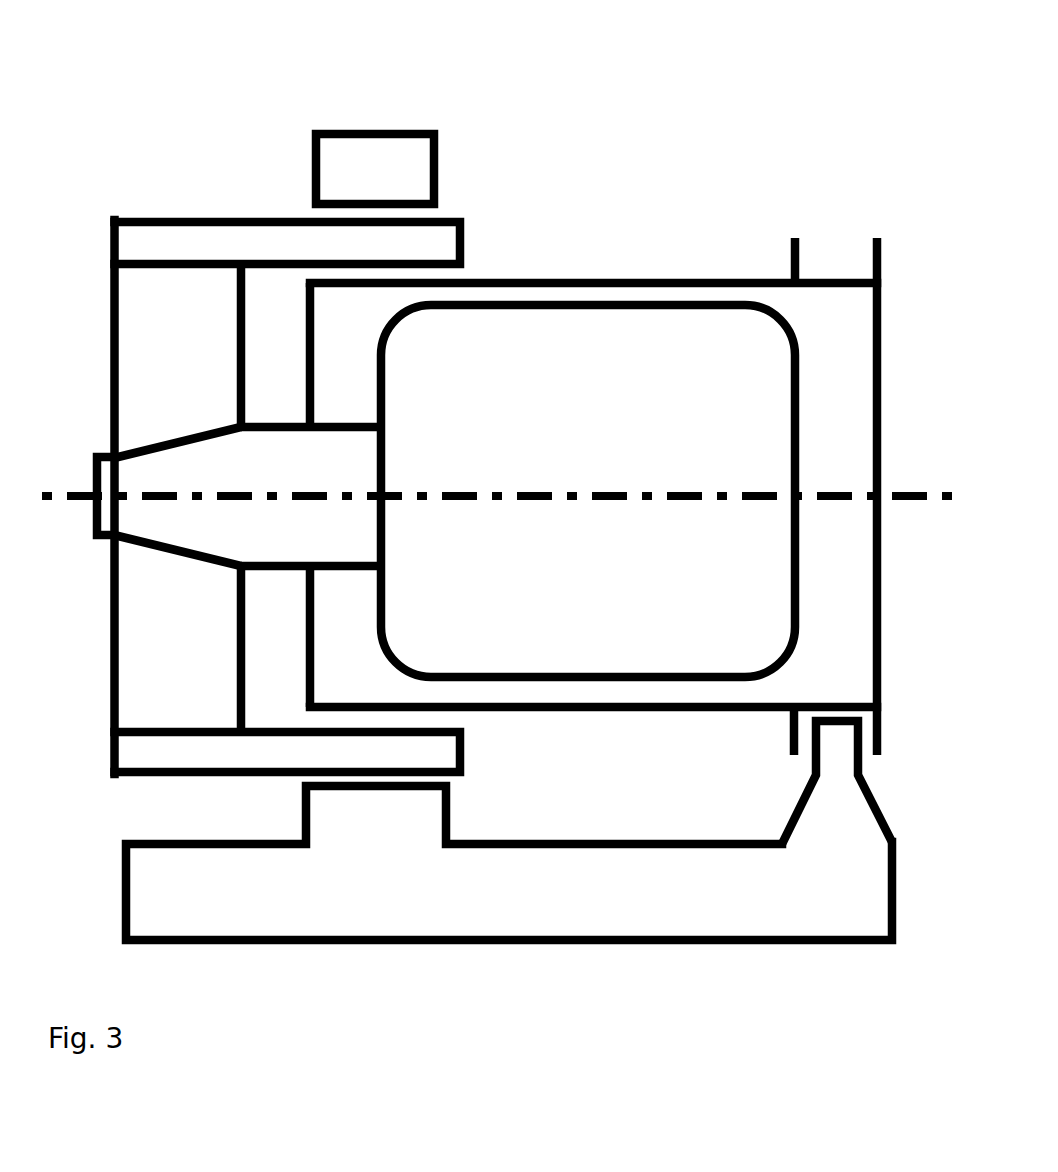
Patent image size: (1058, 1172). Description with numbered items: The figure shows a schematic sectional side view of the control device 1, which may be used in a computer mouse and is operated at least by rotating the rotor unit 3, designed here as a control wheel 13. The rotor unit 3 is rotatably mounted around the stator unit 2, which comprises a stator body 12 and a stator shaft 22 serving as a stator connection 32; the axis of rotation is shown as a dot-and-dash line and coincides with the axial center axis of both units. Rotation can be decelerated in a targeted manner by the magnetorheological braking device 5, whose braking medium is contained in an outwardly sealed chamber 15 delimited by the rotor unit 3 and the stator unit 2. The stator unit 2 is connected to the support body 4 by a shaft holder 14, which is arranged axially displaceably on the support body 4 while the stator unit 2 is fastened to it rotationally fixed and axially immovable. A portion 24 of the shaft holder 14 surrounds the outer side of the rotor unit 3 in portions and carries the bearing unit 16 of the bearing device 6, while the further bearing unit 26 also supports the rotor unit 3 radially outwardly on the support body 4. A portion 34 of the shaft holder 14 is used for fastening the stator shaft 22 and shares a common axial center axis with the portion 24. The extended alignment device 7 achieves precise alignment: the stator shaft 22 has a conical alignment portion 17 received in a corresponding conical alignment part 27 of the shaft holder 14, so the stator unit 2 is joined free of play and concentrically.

The control device 1 is at (105, 102).
The stator unit 2 is at (380, 323).
The rotor unit 3 is at (605, 280).
The support body 4 is at (333, 130).
The braking device 5 is at (733, 293).
The bearing device 6 is at (293, 715).
The alignment device 7 is at (102, 317).
The stator body 12 is at (540, 300).
The control wheel 13 is at (688, 278).
The shaft holder 14 is at (145, 270).
The chamber 15 is at (862, 348).
The bearing unit 16 is at (377, 735).
The alignment portion 17 is at (155, 440).
The stator shaft 22 is at (117, 518).
The portion of the shaft holder 24 is at (395, 218).
The further bearing unit 26 is at (848, 727).
The alignment part 27 is at (170, 433).
The stator connection 32 is at (265, 538).
The portion of the shaft holder 34 is at (167, 558).